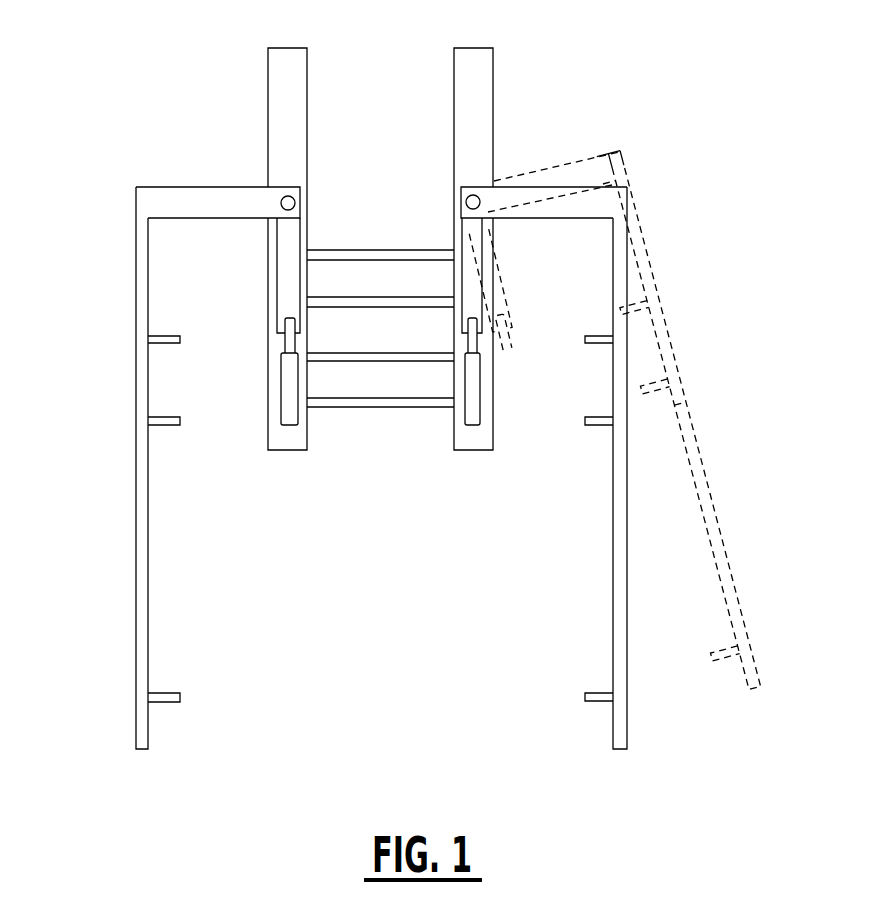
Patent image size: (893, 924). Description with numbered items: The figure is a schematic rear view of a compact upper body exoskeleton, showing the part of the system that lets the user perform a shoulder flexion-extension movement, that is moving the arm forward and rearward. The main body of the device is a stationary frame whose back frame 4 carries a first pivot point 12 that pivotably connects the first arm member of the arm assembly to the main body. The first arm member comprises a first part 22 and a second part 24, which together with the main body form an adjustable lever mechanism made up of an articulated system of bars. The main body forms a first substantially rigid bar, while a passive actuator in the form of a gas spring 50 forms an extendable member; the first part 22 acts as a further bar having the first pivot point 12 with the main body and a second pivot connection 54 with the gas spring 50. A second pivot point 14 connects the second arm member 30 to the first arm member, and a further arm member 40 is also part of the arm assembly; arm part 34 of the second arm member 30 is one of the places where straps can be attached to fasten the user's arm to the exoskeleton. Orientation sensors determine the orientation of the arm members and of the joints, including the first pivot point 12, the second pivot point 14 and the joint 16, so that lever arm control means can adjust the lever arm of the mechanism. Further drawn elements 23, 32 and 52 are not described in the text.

The back frame 4 is at (276, 90).
The first pivot point 12 is at (463, 190).
The second pivot point 14 is at (631, 158).
The joint 16 is at (702, 404).
The first part 22 is at (497, 267).
The hinge 23 is at (617, 144).
The second part 24 is at (598, 163).
The second arm member 30 is at (121, 265).
The hinge axis 32 is at (615, 160).
The arm part 34 is at (648, 278).
The arm member 40 is at (160, 567).
The gas spring 50 is at (500, 404).
The slider 52 is at (472, 426).
The second pivot connection 54 is at (495, 316).